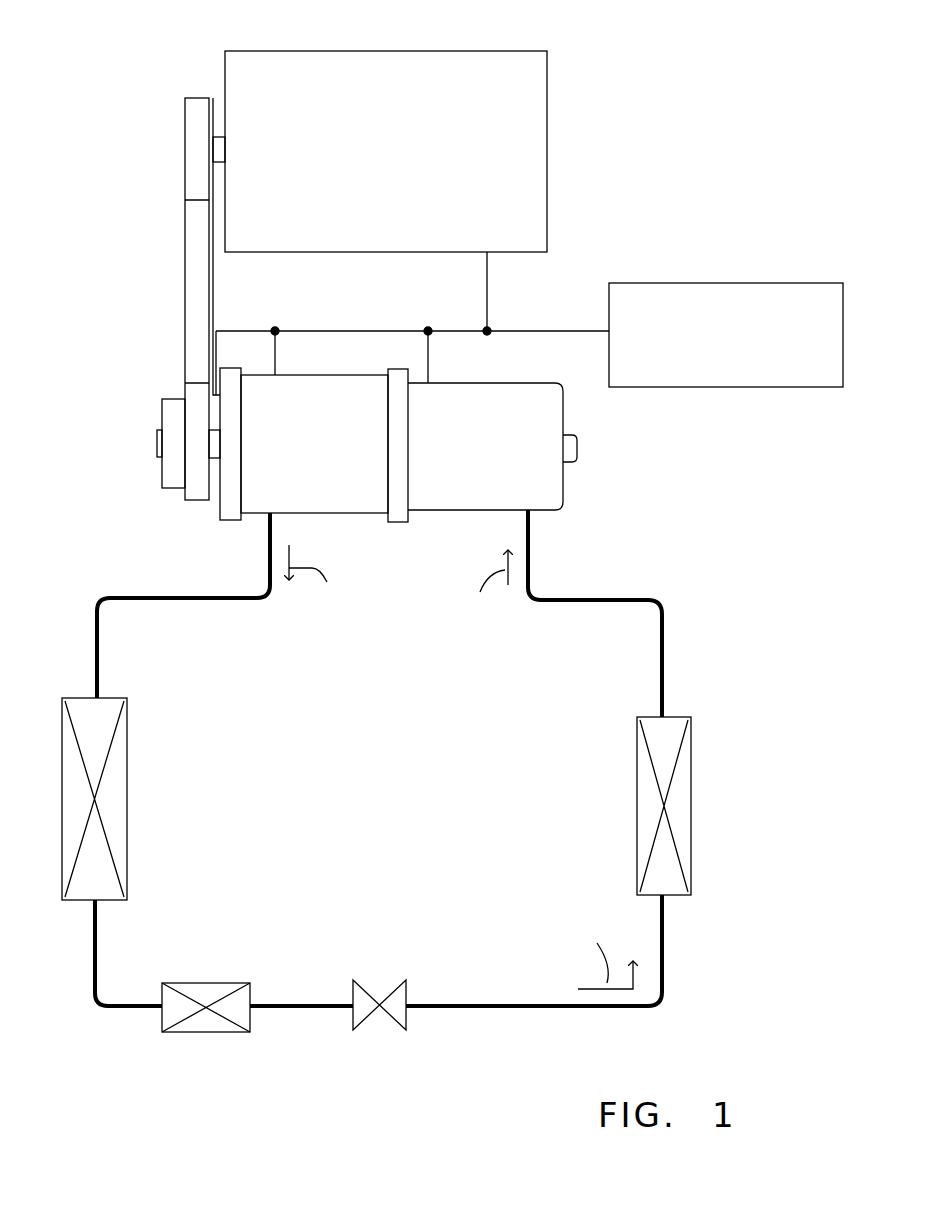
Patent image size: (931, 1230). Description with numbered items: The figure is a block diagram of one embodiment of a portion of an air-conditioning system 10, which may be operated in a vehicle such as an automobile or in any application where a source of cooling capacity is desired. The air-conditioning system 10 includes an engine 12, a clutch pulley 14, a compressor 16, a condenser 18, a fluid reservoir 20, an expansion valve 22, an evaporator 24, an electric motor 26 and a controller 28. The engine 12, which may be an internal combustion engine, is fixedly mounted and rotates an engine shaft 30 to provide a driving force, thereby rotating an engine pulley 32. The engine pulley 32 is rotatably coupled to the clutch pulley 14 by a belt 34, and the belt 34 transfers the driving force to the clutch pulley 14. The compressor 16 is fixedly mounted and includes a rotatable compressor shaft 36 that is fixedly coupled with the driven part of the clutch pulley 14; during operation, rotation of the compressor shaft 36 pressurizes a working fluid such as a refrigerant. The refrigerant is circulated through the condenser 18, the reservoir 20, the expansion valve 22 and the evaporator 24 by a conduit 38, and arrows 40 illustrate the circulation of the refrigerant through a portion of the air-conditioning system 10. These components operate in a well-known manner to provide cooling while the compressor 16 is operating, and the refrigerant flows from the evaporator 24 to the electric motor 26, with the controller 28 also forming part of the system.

The air-conditioning system 10 is at (705, 103).
The engine 12 is at (497, 52).
The clutch pulley 14 is at (175, 405).
The compressor 16 is at (318, 388).
The condenser 18 is at (110, 710).
The fluid reservoir 20 is at (203, 983).
The expansion valve 22 is at (365, 985).
The evaporator 24 is at (690, 718).
The electric motor 26 is at (553, 418).
The controller 28 is at (688, 283).
The engine shaft 30 is at (218, 145).
The engine pulley 32 is at (187, 131).
The belt 34 is at (196, 280).
The compressor shaft 36 is at (215, 445).
The conduit 38 is at (128, 597).
The arrows 40 is at (461, 767).